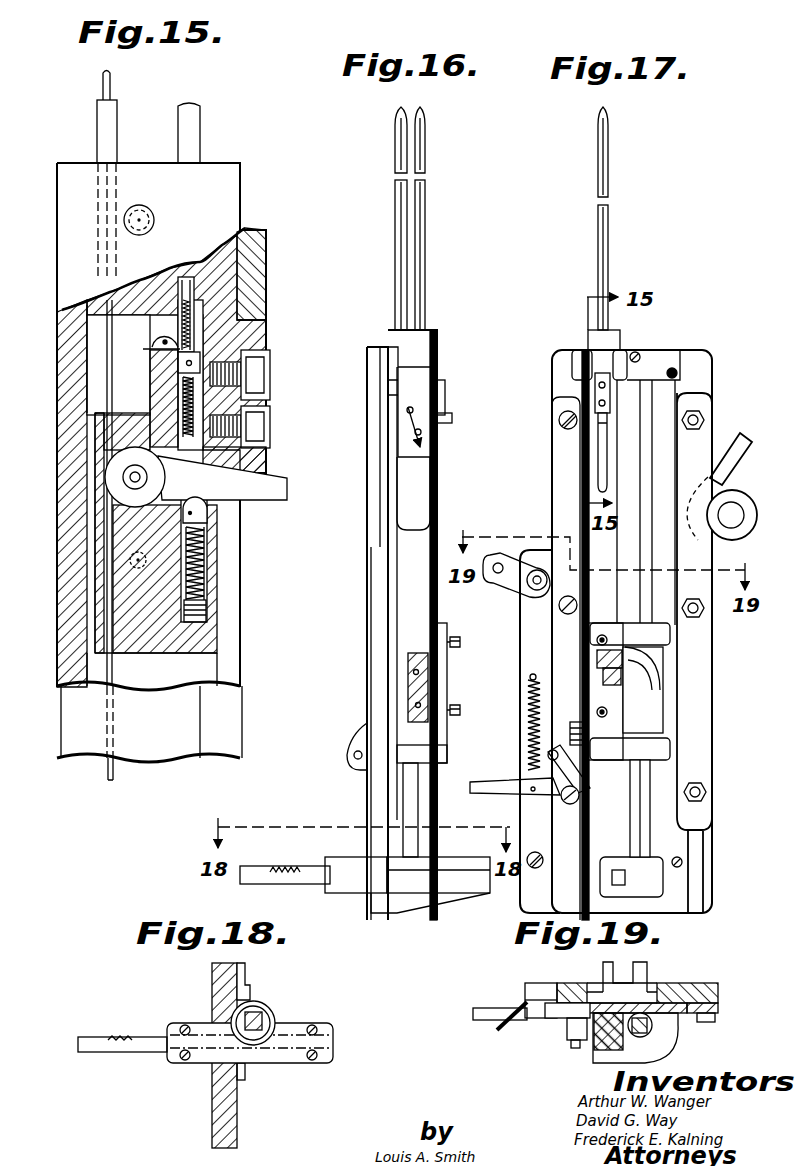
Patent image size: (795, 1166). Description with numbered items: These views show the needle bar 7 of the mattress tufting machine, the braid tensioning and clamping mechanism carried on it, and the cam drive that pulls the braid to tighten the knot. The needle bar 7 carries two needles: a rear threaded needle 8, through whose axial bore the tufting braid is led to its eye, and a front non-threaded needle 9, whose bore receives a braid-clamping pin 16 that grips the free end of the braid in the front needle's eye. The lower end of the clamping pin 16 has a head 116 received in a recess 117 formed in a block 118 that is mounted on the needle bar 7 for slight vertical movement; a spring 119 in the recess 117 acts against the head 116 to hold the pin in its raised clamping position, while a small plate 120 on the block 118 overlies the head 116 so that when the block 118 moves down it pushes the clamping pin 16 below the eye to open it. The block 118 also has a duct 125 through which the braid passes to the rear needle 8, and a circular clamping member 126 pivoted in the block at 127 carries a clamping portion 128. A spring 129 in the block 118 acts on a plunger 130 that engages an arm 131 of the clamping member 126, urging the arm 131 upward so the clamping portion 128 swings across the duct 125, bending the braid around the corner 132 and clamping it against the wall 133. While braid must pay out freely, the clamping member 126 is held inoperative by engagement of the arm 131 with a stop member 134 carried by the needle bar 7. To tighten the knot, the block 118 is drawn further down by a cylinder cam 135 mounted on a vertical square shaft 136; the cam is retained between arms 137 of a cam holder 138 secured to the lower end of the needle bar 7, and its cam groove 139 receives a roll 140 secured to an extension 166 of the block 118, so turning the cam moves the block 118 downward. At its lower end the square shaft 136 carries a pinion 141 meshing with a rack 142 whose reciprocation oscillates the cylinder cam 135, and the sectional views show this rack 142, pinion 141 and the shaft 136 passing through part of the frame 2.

In FIG. 18, the frame plate 2 is at (215, 983).
In FIG. 19, the frame plate 2 is at (665, 993).
In FIG. 15, the needle bar 7 is at (245, 230).
In FIG. 16, the needle bar 7 is at (388, 333).
In FIG. 17, the needle bar 7 is at (588, 340).
In FIG. 15, the rear threaded needle 8 is at (97, 140).
In FIG. 16, the rear threaded needle 8 is at (395, 253).
In FIG. 15, the front non-threaded needle 9 is at (200, 140).
In FIG. 16, the front non-threaded needle 9 is at (425, 253).
In FIG. 17, the front non-threaded needle 9 is at (608, 250).
In FIG. 15, the braid-clamping pin 16 is at (190, 290).
In FIG. 15, the head 116 is at (193, 363).
In FIG. 15, the recess 117 is at (258, 398).
In FIG. 15, the block 118 is at (167, 415).
In FIG. 15, the spring 119 is at (262, 420).
In FIG. 15, the plate 120 is at (168, 341).
In FIG. 15, the duct 125 is at (100, 565).
In FIG. 15, the circular clamping member 126 is at (97, 417).
In FIG. 15, the pivot 127 is at (133, 477).
In FIG. 15, the clamping portion 128 is at (113, 447).
In FIG. 15, the spring 129 is at (205, 545).
In FIG. 15, the plunger 130 is at (197, 512).
In FIG. 15, the arm 131 is at (282, 492).
In FIG. 16, the arm 131 is at (452, 418).
In FIG. 17, the arm 131 is at (598, 418).
In FIG. 15, the corner 132 is at (110, 438).
In FIG. 15, the wall 133 is at (93, 468).
In FIG. 15, the stop member 134 is at (262, 470).
In FIG. 16, the stop member 134 is at (441, 400).
In FIG. 17, the stop member 134 is at (595, 392).
In FIG. 17, the cylinder cam 135 is at (652, 717).
In FIG. 16, the square shaft 136 is at (412, 806).
In FIG. 17, the square shaft 136 is at (647, 825).
In FIG. 18, the square shaft 136 is at (273, 1013).
In FIG. 19, the square shaft 136 is at (653, 1027).
In FIG. 17, the arms 137 is at (663, 632).
In FIG. 17, the cam holder 138 is at (603, 695).
In FIG. 19, the cam holder 138 is at (598, 998).
In FIG. 17, the cam groove 139 is at (650, 672).
In FIG. 17, the roll 140 is at (600, 665).
In FIG. 18, the pinion 141 is at (247, 1009).
In FIG. 16, the rack 142 is at (302, 866).
In FIG. 18, the rack 142 is at (135, 1043).
In FIG. 17, the extension 166 is at (592, 650).
In FIG. 19, the extension 166 is at (590, 1047).